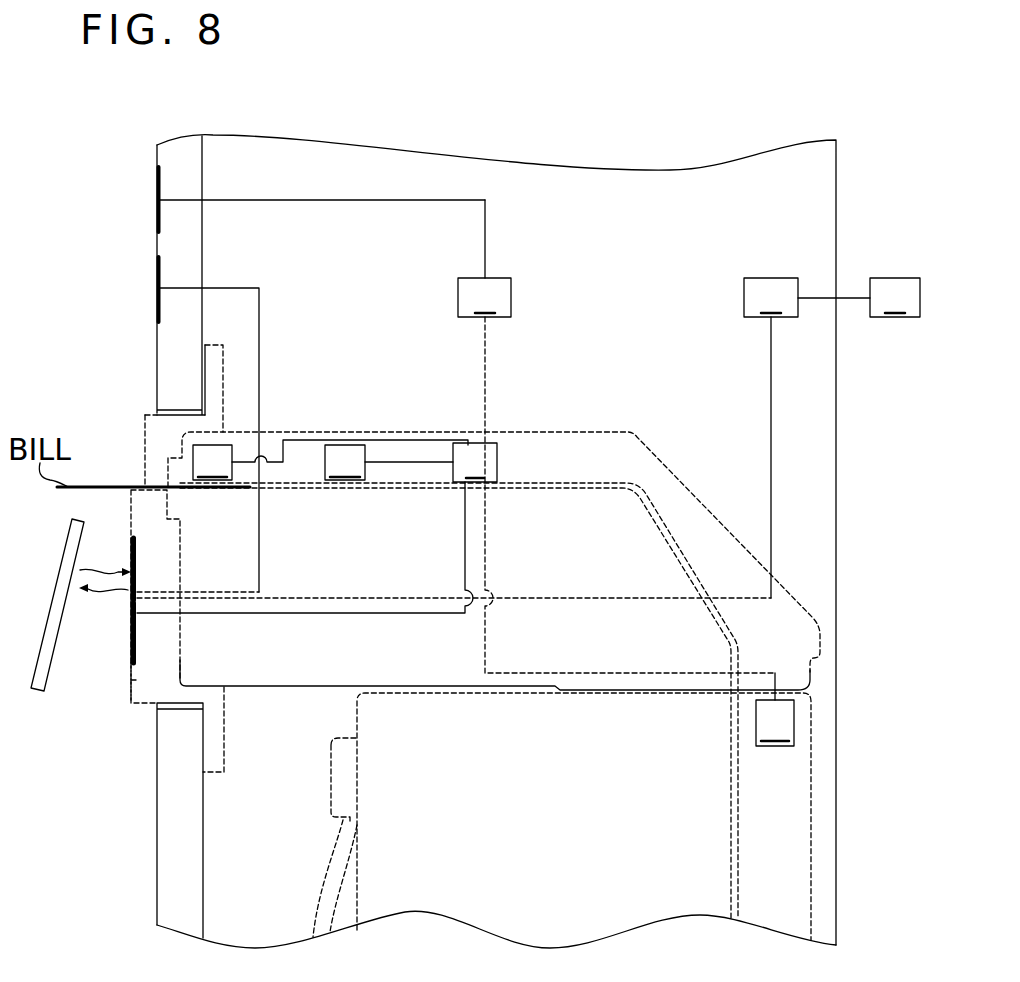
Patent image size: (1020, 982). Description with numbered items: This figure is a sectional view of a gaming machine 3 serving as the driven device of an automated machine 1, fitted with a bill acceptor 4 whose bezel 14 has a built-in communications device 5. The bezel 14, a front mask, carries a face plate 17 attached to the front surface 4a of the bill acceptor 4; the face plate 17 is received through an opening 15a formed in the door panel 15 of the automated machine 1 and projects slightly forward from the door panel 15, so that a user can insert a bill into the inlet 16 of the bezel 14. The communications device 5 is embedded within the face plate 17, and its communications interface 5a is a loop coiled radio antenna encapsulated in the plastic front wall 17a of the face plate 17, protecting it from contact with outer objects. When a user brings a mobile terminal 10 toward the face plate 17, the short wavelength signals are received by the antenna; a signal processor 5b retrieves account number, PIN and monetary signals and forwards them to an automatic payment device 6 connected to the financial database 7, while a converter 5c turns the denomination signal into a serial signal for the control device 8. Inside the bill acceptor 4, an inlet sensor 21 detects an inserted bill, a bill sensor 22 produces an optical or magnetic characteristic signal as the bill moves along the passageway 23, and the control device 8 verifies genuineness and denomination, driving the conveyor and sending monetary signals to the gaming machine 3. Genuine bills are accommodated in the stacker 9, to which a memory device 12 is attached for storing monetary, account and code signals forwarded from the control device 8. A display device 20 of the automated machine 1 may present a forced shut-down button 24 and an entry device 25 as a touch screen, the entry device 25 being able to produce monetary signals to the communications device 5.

The automated machine 1 is at (80, 245).
The gaming machine 3 is at (616, 436).
The bill acceptor 4 is at (690, 468).
The front surface 4a is at (170, 640).
The communications device 5 is at (168, 579).
The communications interface 5a is at (130, 656).
The signal processor 5b is at (158, 562).
The converter 5c is at (137, 615).
The automatic payment device 6 is at (771, 438).
The financial database 7 is at (859, 297).
The control device 8 is at (475, 462).
The stacker 9 is at (301, 908).
The mobile terminal 10 is at (64, 558).
The memory device 12 is at (775, 709).
The bezel 14 is at (234, 711).
The door panel 15 is at (163, 850).
The opening 15a is at (180, 411).
The inlet 16 is at (142, 487).
The face plate 17 is at (147, 698).
The front wall 17a is at (130, 681).
The display device 20 is at (157, 338).
The inlet sensor 21 is at (330, 460).
The bill sensor 22 is at (389, 462).
The passageway 23 is at (588, 487).
The forced shut-down button 24 is at (157, 218).
The entry device 25 is at (157, 310).